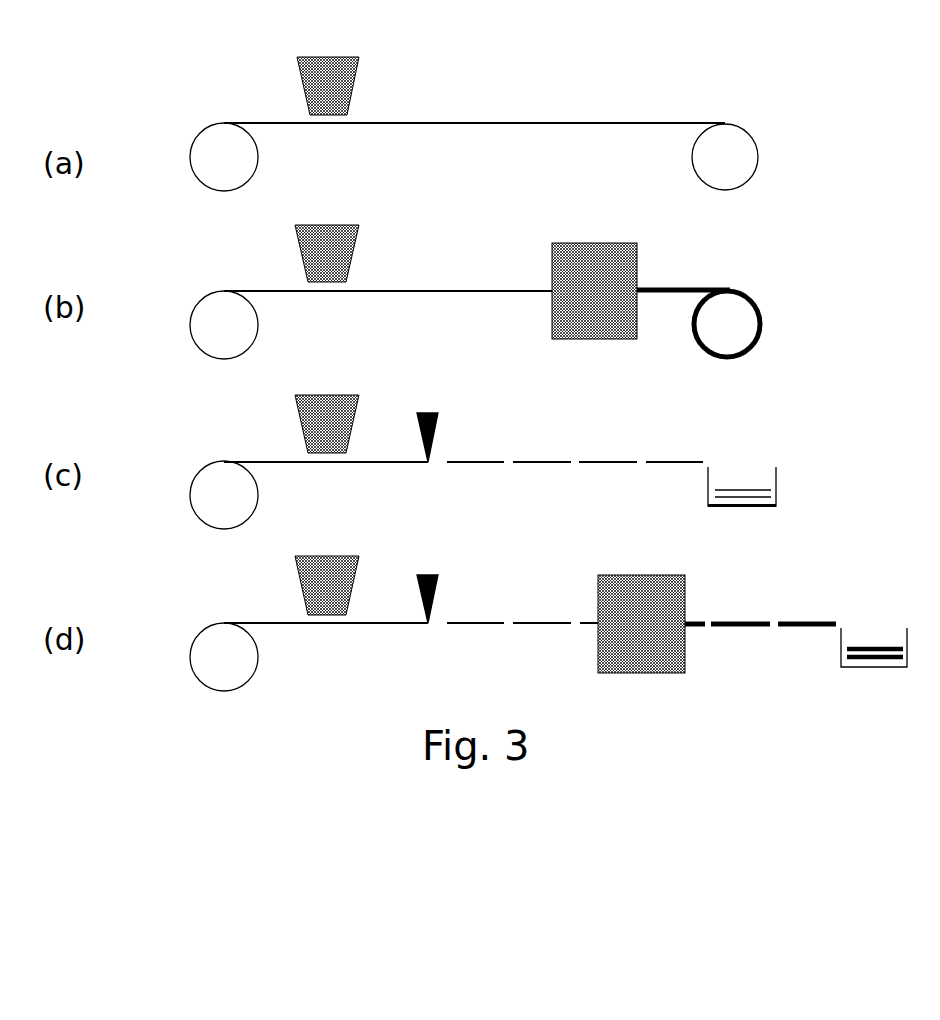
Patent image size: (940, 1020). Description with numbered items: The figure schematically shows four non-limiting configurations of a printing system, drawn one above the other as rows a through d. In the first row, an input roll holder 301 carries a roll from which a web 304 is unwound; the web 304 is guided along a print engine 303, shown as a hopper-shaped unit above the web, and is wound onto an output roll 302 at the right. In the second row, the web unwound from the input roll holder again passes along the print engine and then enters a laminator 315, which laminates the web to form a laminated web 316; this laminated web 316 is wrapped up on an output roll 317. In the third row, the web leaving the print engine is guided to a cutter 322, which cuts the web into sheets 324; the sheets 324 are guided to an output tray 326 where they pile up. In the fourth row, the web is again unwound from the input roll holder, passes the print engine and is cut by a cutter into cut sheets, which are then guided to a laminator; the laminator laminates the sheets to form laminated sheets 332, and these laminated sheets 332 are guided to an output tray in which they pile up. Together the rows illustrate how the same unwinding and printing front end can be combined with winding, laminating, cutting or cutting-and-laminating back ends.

The input roll holder 301 is at (258, 153).
The output roll 302 is at (758, 158).
The print engine 303 is at (327, 57).
The web 304 is at (432, 123).
The laminator 315 is at (595, 243).
The laminated web 316 is at (686, 288).
The output roll 317 is at (763, 325).
The cutter 322 is at (438, 428).
The sheets 324 is at (611, 462).
The output tray 326 is at (776, 477).
The laminated sheets 332 is at (735, 622).